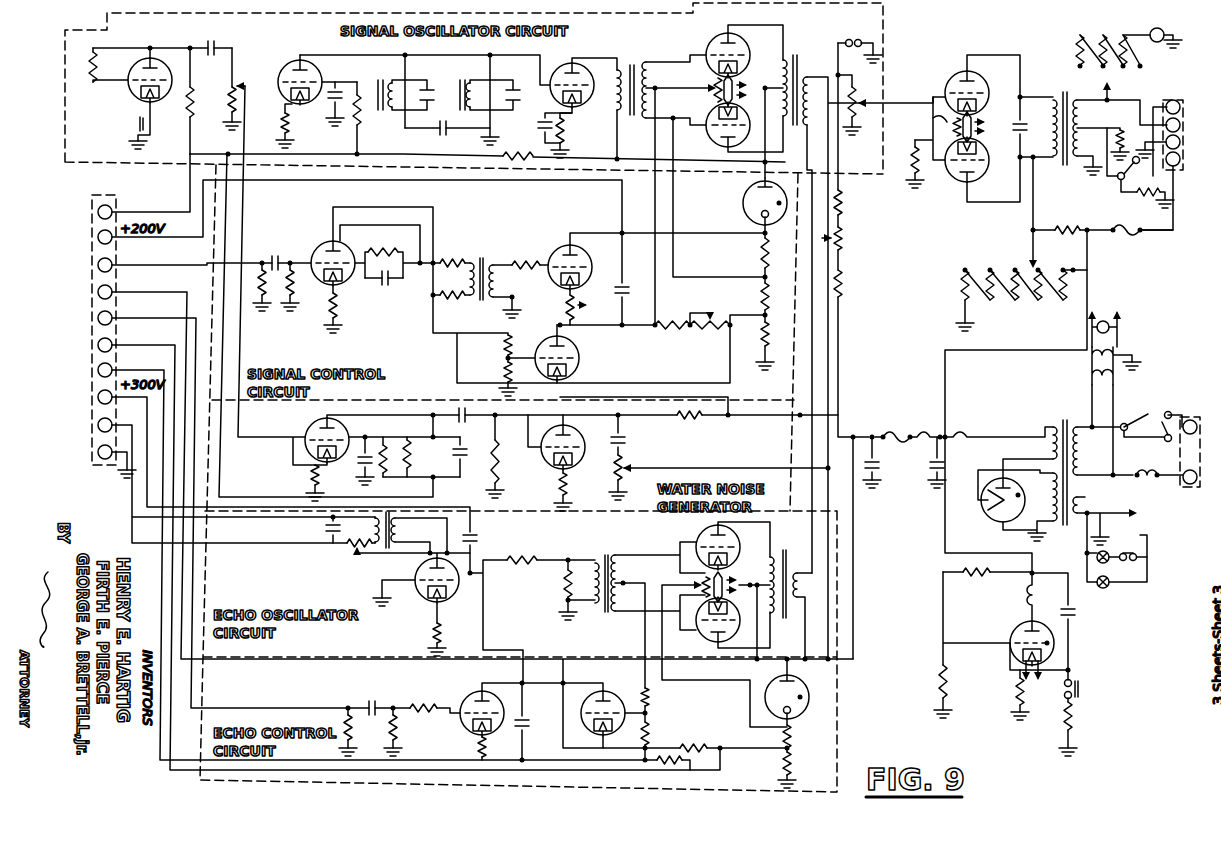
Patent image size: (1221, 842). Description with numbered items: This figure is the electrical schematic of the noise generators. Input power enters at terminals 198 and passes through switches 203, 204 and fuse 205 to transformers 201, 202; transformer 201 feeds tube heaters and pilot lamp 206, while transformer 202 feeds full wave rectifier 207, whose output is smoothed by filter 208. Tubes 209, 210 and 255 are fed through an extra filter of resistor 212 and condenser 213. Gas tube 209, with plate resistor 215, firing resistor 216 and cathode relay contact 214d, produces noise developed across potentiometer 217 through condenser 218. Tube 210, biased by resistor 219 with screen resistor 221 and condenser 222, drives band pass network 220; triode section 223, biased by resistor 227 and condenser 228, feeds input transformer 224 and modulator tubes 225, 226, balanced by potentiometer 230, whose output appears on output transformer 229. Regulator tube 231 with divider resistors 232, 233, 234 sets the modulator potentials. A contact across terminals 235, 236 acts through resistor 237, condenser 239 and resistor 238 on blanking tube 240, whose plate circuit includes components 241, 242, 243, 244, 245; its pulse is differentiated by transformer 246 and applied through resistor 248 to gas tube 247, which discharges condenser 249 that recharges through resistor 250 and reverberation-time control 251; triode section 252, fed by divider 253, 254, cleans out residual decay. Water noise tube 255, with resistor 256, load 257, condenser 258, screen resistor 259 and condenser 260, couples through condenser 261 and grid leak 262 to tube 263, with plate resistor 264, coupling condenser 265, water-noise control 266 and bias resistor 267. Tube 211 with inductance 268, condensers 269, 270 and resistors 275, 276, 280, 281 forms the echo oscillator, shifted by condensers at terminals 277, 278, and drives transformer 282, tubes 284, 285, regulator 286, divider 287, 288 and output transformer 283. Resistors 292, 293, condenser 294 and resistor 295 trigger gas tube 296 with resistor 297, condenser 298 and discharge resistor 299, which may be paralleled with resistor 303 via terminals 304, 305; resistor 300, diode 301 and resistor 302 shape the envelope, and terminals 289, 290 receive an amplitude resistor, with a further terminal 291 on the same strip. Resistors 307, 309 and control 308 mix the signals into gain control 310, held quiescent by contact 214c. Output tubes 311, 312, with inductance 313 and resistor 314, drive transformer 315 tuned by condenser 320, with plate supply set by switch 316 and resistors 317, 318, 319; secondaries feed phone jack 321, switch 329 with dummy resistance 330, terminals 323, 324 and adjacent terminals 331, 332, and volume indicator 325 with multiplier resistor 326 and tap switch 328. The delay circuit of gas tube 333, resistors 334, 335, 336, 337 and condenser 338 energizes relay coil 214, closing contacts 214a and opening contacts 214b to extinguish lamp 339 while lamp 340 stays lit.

The terminals 198 is at (1176, 482).
The transformer 201 is at (1096, 358).
The transformer 202 is at (1063, 464).
The switch 203 is at (1124, 418).
The switch 204 is at (1182, 414).
The fuse 205 is at (1130, 464).
The pilot lamp 206 is at (1124, 329).
The full wave rectifier 207 is at (1002, 500).
The power supply filter 208 is at (952, 450).
The tube 209 is at (148, 65).
The tube 210 is at (292, 70).
The tube 211 is at (420, 570).
The resistor 212 is at (518, 146).
The condenser 213 is at (452, 138).
The relay 214 is at (1051, 597).
The relay contacts 214a is at (1097, 686).
The relay contacts 214b is at (1158, 549).
The relay contact 214c is at (860, 36).
The relay contact 214d is at (161, 126).
The resistor 215 is at (208, 101).
The resistor 216 is at (96, 75).
The potentiometer 217 is at (249, 89).
The condenser 218 is at (211, 39).
The resistor 219 is at (275, 126).
The band pass network 220 is at (449, 91).
The dropping resistor 221 is at (377, 118).
The condenser 222 is at (324, 104).
The triode section 223 is at (579, 72).
The input transformer 224 is at (638, 96).
The modulator tube 225 is at (741, 46).
The modulator tube 226 is at (732, 130).
The resistor 227 is at (580, 135).
The condenser 228 is at (541, 125).
The output transformer 229 is at (795, 78).
The balance potentiometer 230 is at (701, 86).
The voltage regulator tube 231 is at (762, 194).
The resistor 232 is at (751, 253).
The resistor 233 is at (751, 296).
The resistor 234 is at (753, 346).
The terminal 235 is at (82, 237).
The terminal 236 is at (82, 212).
The resistor 237 is at (276, 308).
The resistor 238 is at (306, 308).
The condenser 239 is at (271, 254).
The tube 240 is at (360, 246).
The resistor 241 is at (394, 253).
The resistor 242 is at (453, 252).
The resistor 243 is at (350, 309).
The capacitor 244 is at (386, 287).
The resistor 245 is at (441, 281).
The transformer 246 is at (490, 269).
The tube 247 is at (561, 246).
The resistor 248 is at (520, 254).
The condenser 249 is at (640, 279).
The resistor 250 is at (670, 334).
The control 251 is at (727, 329).
The triode section 252 is at (551, 336).
The voltage divider resistor 253 is at (491, 376).
The voltage divider resistor 254 is at (488, 348).
The amplifier tube 255 is at (319, 420).
The resistor 256 is at (312, 480).
The resistor 257 is at (406, 445).
The condenser 258 is at (476, 457).
The resistor 259 is at (401, 467).
The condenser 260 is at (354, 467).
The condenser 261 is at (568, 423).
The grid leak resistor 262 is at (512, 456).
The tube 263 is at (556, 439).
The plate resistor 264 is at (690, 416).
The condenser 265 is at (638, 435).
The output control 266 is at (704, 477).
The resistor 267 is at (556, 484).
The inductance 268 is at (411, 532).
The condenser 269 is at (312, 529).
The condenser 270 is at (490, 551).
The resistor 275 is at (372, 551).
The resistor 276 is at (433, 635).
The terminal 277 is at (82, 425).
The terminal 278 is at (82, 397).
The resistor 280 is at (551, 550).
The resistor 281 is at (564, 588).
The input transformer 282 is at (614, 572).
The output transformer 283 is at (775, 592).
The tube 284 is at (725, 542).
The tube 285 is at (724, 625).
The voltage regulator tube 286 is at (801, 692).
The voltage divider resistor 287 is at (809, 738).
The voltage divider resistor 288 is at (807, 768).
The terminal 289 is at (82, 318).
The terminal 290 is at (82, 292).
The terminal 291 is at (82, 265).
The resistor 292 is at (365, 732).
The resistor 293 is at (412, 732).
The condenser 294 is at (371, 698).
The resistor 295 is at (426, 697).
The gas tube 296 is at (480, 689).
The current limiting resistor 297 is at (478, 756).
The condenser 298 is at (540, 723).
The discharge resistor 299 is at (717, 739).
The resistor 300 is at (666, 736).
The diode element 301 is at (605, 696).
The resistor 302 is at (666, 696).
The resistor 303 is at (701, 769).
The terminal 304 is at (82, 370).
The terminal 305 is at (82, 345).
The resistor 307 is at (858, 203).
The control 308 is at (853, 242).
The resistor 309 is at (858, 353).
The main gain control 310 is at (868, 105).
The output tube 311 is at (975, 86).
The output tube 312 is at (974, 168).
The inductance 313 is at (941, 124).
The bias resistor 314 is at (901, 171).
The output transformer 315 is at (1055, 119).
The tap switch 316 is at (1012, 272).
The resistor 317 is at (1061, 272).
The resistor 318 is at (973, 287).
The resistor 319 is at (1102, 220).
The condenser 320 is at (1039, 115).
The phone jack 321 is at (1118, 131).
The terminal 323 is at (1180, 189).
The terminal 324 is at (1178, 145).
The volume indicator 325 is at (1174, 29).
The resistor 326 is at (1130, 26).
The tap switch 328 is at (1126, 92).
The switch 329 is at (1119, 175).
The dummy resistance 330 is at (1152, 200).
The terminal 331 is at (1193, 125).
The terminal 332 is at (1193, 107).
The gas tube 333 is at (1012, 632).
The resistor 334 is at (992, 577).
The resistor 335 is at (926, 691).
The resistor 336 is at (1006, 695).
The resistor 337 is at (1088, 729).
The condenser 338 is at (1072, 616).
The pilot lamp 339 is at (1083, 557).
The pilot lamp 340 is at (1119, 578).